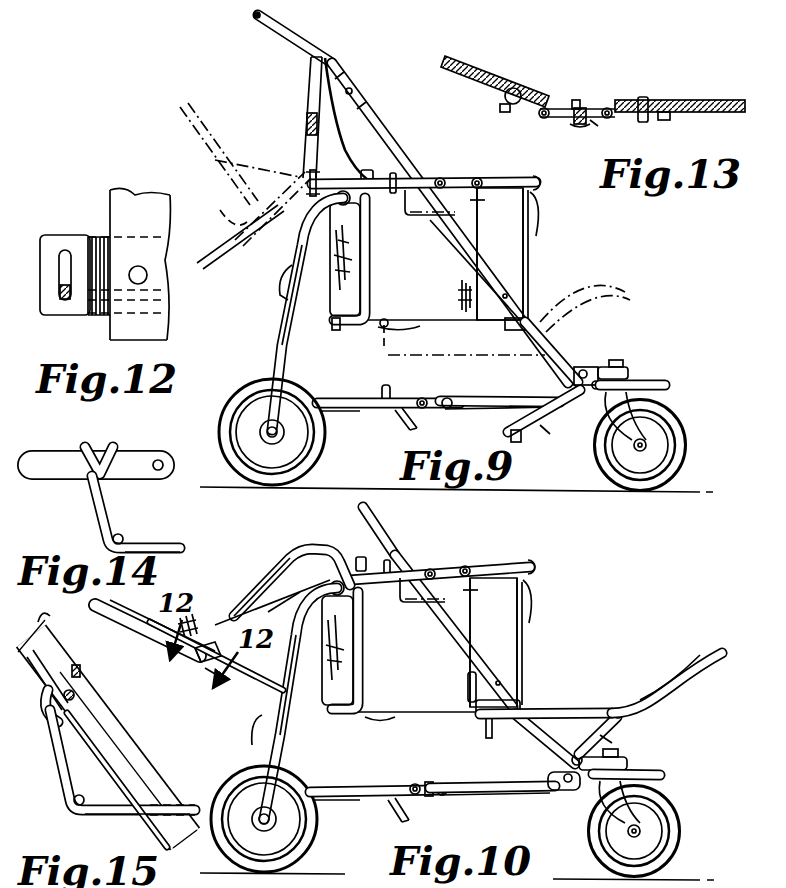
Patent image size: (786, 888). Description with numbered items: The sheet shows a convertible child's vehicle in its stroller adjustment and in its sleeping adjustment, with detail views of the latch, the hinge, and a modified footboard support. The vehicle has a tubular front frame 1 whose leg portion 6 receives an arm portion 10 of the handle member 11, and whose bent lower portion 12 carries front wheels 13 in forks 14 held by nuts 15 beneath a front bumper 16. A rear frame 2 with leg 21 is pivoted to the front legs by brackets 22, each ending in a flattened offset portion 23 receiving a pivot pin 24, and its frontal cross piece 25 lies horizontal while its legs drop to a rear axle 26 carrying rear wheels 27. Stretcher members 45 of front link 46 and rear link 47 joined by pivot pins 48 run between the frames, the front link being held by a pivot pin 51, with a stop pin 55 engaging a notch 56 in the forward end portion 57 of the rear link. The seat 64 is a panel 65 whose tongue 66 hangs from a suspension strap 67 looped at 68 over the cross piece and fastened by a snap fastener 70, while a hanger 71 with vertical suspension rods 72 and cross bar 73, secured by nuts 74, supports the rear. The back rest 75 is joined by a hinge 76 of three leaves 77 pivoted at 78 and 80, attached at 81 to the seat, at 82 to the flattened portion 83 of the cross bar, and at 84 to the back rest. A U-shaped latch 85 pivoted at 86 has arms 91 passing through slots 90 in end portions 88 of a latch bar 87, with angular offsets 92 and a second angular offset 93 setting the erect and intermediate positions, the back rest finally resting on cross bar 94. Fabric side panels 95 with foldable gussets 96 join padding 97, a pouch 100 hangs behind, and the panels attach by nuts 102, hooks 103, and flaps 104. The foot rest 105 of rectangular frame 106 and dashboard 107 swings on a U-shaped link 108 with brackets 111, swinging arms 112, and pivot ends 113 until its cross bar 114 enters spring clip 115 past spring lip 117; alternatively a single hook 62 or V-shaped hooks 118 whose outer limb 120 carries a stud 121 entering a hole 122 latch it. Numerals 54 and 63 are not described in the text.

In FIG. 9, the front frame 1 is at (360, 92).
In FIG. 15, the front frame 1 is at (45, 648).
In FIG. 10, the front frame 1 is at (380, 526).
In FIG. 9, the rear frame 2 is at (270, 355).
In FIG. 10, the rear frame 2 is at (280, 705).
In FIG. 9, the leg portion 6 is at (481, 270).
In FIG. 15, the leg portion 6 is at (140, 770).
In FIG. 10, the leg portion 6 is at (480, 666).
In FIG. 9, the arm portion 10 is at (292, 36).
In FIG. 9, the handle member 11 is at (252, 15).
In FIG. 10, the lower portion of the front frame 12 is at (546, 750).
In FIG. 9, the front wheel 13 is at (688, 445).
In FIG. 10, the front wheel 13 is at (681, 836).
In FIG. 9, the fork 14 is at (640, 412).
In FIG. 10, the fork 14 is at (630, 800).
In FIG. 9, the nut 15 is at (628, 370).
In FIG. 9, the front bumper 16 is at (668, 384).
In FIG. 10, the front bumper 16 is at (663, 775).
In FIG. 9, the leg 21 is at (288, 341).
In FIG. 10, the leg 21 is at (290, 726).
In FIG. 9, the bracket 22 is at (428, 213).
In FIG. 10, the bracket 22 is at (421, 601).
In FIG. 10, the flattened offset portion 23 is at (432, 568).
In FIG. 9, the pivot pin 24 is at (441, 178).
In FIG. 9, the frontal cross piece 25 is at (533, 175).
In FIG. 10, the frontal cross piece 25 is at (530, 561).
In FIG. 10, the rear axle 26 is at (269, 812).
In FIG. 9, the rear wheel 27 is at (316, 470).
In FIG. 10, the rear wheel 27 is at (310, 848).
In FIG. 9, the stretcher member 45 is at (475, 396).
In FIG. 10, the stretcher member 45 is at (472, 782).
In FIG. 9, the front link 46 is at (530, 410).
In FIG. 10, the front link 46 is at (512, 795).
In FIG. 9, the rear link 47 is at (366, 400).
In FIG. 14, the rear link 47 is at (58, 458).
In FIG. 10, the rear link 47 is at (366, 788).
In FIG. 9, the pivot pin 48 is at (446, 360).
In FIG. 10, the pivot pin 48 is at (414, 784).
In FIG. 9, the pivot pin 51 is at (597, 380).
In FIG. 10, the pivot pin 51 is at (575, 756).
In FIG. 9, the bar section 54 is at (352, 411).
In FIG. 10, the bar section 54 is at (335, 800).
In FIG. 10, the stop pin 55 is at (443, 785).
In FIG. 9, the notch 56 is at (446, 410).
In FIG. 10, the forward end portion 57 is at (429, 782).
In FIG. 9, the hook 62 is at (385, 384).
In FIG. 10, the hook 62 is at (466, 676).
In FIG. 9, the link 63 is at (396, 431).
In FIG. 10, the link 63 is at (404, 818).
In FIG. 9, the seat 64 is at (530, 240).
In FIG. 10, the seat 64 is at (523, 628).
In FIG. 9, the panel 65 is at (470, 310).
In FIG. 13, the panel 65 is at (722, 100).
In FIG. 9, the tongue 66 is at (520, 312).
In FIG. 9, the suspension strap 67 is at (530, 262).
In FIG. 10, the suspension strap 67 is at (522, 660).
In FIG. 9, the loop 68 is at (540, 195).
In FIG. 10, the loop 68 is at (532, 585).
In FIG. 9, the snap fastener 70 is at (512, 330).
In FIG. 10, the snap fastener 70 is at (522, 709).
In FIG. 9, the hanger 71 is at (372, 256).
In FIG. 10, the hanger 71 is at (365, 648).
In FIG. 9, the vertical suspension rod 72 is at (372, 290).
In FIG. 10, the vertical suspension rod 72 is at (360, 690).
In FIG. 9, the cross bar 73 is at (338, 327).
In FIG. 13, the cross bar 73 is at (594, 125).
In FIG. 9, the nut 74 is at (367, 170).
In FIG. 10, the nut 74 is at (364, 553).
In FIG. 9, the back rest 75 is at (318, 113).
In FIG. 13, the back rest 75 is at (462, 62).
In FIG. 12, the back rest 75 is at (143, 195).
In FIG. 10, the back rest 75 is at (160, 612).
In FIG. 13, the hinge 76 is at (596, 105).
In FIG. 13, the leaf 77 is at (501, 104).
In FIG. 13, the pivot 78 is at (612, 106).
In FIG. 13, the pivot 80 is at (540, 117).
In FIG. 13, the attachment 81 is at (648, 98).
In FIG. 13, the attachment 82 is at (581, 106).
In FIG. 13, the flattened portion 83 is at (575, 128).
In FIG. 13, the attachment 84 is at (518, 88).
In FIG. 9, the U-shaped latch 85 is at (216, 241).
In FIG. 10, the U-shaped latch 85 is at (262, 578).
In FIG. 9, the pivotal connection 86 is at (344, 205).
In FIG. 10, the pivotal connection 86 is at (330, 586).
In FIG. 12, the latch bar 87 is at (97, 237).
In FIG. 10, the latch bar 87 is at (206, 674).
In FIG. 12, the end portion 88 is at (40, 272).
In FIG. 12, the slot 90 is at (64, 250).
In FIG. 9, the arm 91 is at (276, 190).
In FIG. 12, the arm 91 is at (64, 301).
In FIG. 10, the arm 91 is at (256, 592).
In FIG. 9, the angular offset 92 is at (310, 172).
In FIG. 10, the angular offset 92 is at (320, 548).
In FIG. 9, the second angular offset 93 is at (276, 287).
In FIG. 10, the second angular offset 93 is at (228, 604).
In FIG. 12, the cross bar 94 is at (158, 312).
In FIG. 10, the cross bar 94 is at (195, 660).
In FIG. 9, the fabric side panel 95 is at (480, 233).
In FIG. 10, the fabric side panel 95 is at (472, 621).
In FIG. 9, the foldable gusset 96 is at (346, 164).
In FIG. 10, the foldable gusset 96 is at (270, 608).
In FIG. 9, the padding 97 is at (322, 80).
In FIG. 10, the padding 97 is at (176, 604).
In FIG. 9, the pouch 100 is at (278, 305).
In FIG. 10, the pouch 100 is at (252, 736).
In FIG. 9, the nut 102 is at (479, 178).
In FIG. 10, the nut 102 is at (467, 566).
In FIG. 9, the hook 103 is at (397, 178).
In FIG. 10, the hook 103 is at (392, 561).
In FIG. 9, the flap 104 is at (486, 202).
In FIG. 10, the flap 104 is at (480, 590).
In FIG. 9, the foot rest 105 is at (620, 285).
In FIG. 14, the foot rest 105 is at (164, 546).
In FIG. 15, the foot rest 105 is at (130, 817).
In FIG. 10, the foot rest 105 is at (690, 650).
In FIG. 10, the rectangular frame 106 is at (585, 710).
In FIG. 9, the dashboard 107 is at (617, 360).
In FIG. 10, the dashboard 107 is at (658, 666).
In FIG. 9, the U-shaped link 108 is at (552, 419).
In FIG. 10, the U-shaped link 108 is at (598, 738).
In FIG. 9, the bracket 111 is at (510, 437).
In FIG. 10, the bracket 111 is at (624, 716).
In FIG. 9, the swinging arm 112 is at (545, 432).
In FIG. 10, the swinging arm 112 is at (608, 744).
In FIG. 9, the pivot end 113 is at (578, 366).
In FIG. 10, the pivot end 113 is at (569, 786).
In FIG. 10, the cross bar 114 is at (489, 738).
In FIG. 9, the spring clip 115 is at (466, 345).
In FIG. 9, the spring lip 117 is at (466, 331).
In FIG. 10, the spring lip 117 is at (468, 714).
In FIG. 14, the hook 118 is at (90, 444).
In FIG. 15, the hook 118 is at (45, 704).
In FIG. 14, the outer limb 120 is at (125, 458).
In FIG. 15, the outer limb 120 is at (72, 722).
In FIG. 15, the stud 121 is at (78, 668).
In FIG. 15, the hole 122 is at (76, 695).